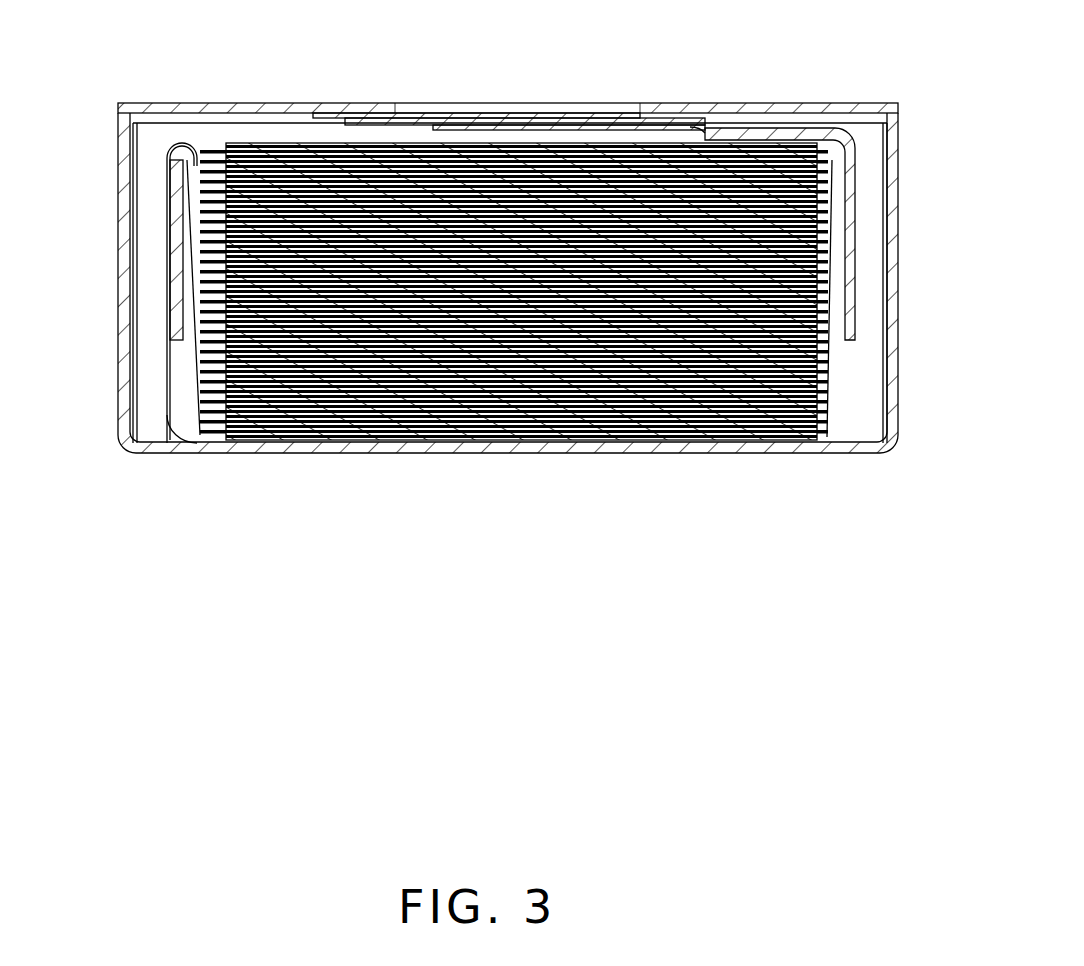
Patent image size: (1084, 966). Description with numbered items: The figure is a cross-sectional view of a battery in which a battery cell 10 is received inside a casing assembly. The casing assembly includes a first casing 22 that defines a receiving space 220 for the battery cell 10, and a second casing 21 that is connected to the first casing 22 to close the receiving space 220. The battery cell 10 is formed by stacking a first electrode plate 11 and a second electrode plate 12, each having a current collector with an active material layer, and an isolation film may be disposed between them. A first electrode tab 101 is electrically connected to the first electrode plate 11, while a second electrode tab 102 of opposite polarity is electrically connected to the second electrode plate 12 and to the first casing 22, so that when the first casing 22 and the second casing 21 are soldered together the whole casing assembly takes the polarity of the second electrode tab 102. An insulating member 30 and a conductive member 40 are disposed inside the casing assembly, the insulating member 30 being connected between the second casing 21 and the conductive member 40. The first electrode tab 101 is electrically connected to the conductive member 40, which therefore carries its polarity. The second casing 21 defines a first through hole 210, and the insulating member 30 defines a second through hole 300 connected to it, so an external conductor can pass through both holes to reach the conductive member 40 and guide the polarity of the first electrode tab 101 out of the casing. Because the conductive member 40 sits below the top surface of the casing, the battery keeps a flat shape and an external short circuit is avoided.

The battery cell 10 is at (503, 359).
The first electrode plate 11 is at (202, 339).
The second electrode plate 12 is at (280, 443).
The second casing 21 is at (783, 108).
The first casing 22 is at (893, 389).
The insulating member 30 is at (336, 113).
The conductive member 40 is at (378, 122).
The first electrode tab 101 is at (842, 203).
The second electrode tab 102 is at (178, 263).
The first through hole 210 is at (505, 108).
The receiving space 220 is at (852, 430).
The second through hole 300 is at (578, 116).